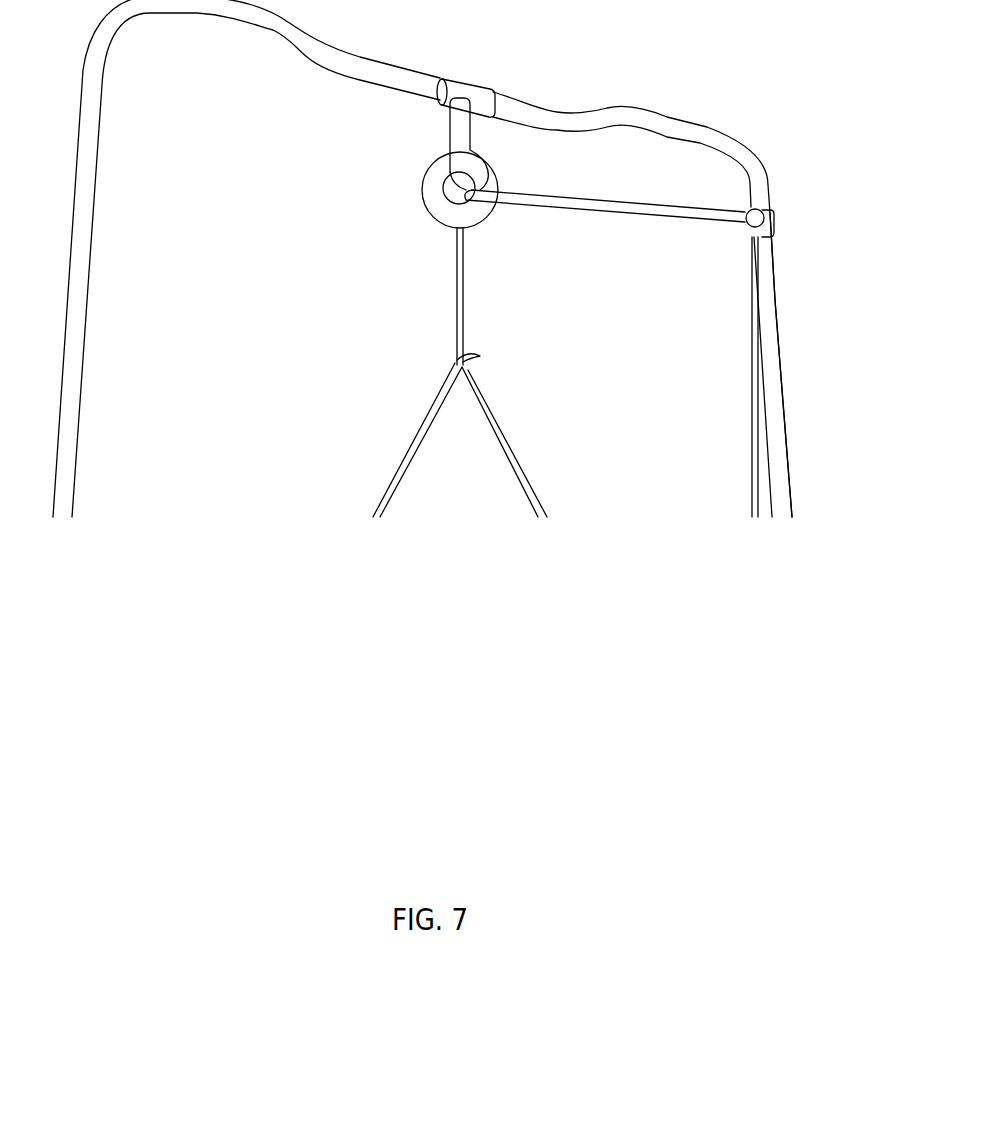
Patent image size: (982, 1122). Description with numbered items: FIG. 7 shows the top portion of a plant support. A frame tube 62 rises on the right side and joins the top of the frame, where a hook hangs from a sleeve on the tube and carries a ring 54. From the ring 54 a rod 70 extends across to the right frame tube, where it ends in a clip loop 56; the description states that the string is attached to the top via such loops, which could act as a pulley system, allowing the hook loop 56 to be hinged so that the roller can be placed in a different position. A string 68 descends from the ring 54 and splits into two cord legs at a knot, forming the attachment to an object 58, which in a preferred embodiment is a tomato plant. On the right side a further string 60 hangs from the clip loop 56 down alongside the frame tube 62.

The ring 54 is at (432, 181).
The clip 56 is at (770, 222).
The cord legs 58 is at (508, 450).
The cord 60 is at (758, 472).
The frame tube 62 is at (772, 392).
The cord 68 is at (457, 287).
The rod 70 is at (645, 214).